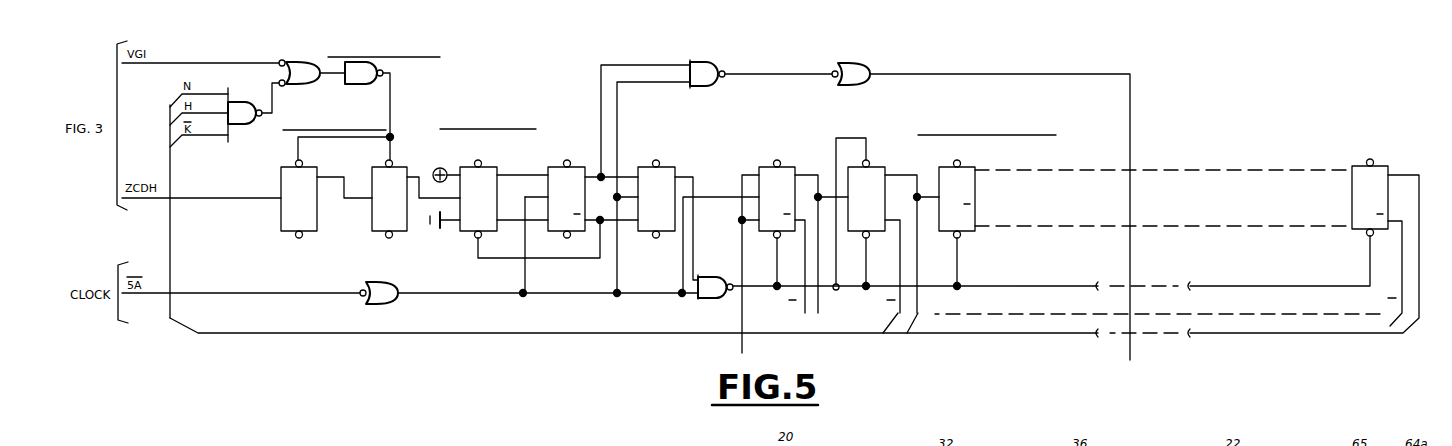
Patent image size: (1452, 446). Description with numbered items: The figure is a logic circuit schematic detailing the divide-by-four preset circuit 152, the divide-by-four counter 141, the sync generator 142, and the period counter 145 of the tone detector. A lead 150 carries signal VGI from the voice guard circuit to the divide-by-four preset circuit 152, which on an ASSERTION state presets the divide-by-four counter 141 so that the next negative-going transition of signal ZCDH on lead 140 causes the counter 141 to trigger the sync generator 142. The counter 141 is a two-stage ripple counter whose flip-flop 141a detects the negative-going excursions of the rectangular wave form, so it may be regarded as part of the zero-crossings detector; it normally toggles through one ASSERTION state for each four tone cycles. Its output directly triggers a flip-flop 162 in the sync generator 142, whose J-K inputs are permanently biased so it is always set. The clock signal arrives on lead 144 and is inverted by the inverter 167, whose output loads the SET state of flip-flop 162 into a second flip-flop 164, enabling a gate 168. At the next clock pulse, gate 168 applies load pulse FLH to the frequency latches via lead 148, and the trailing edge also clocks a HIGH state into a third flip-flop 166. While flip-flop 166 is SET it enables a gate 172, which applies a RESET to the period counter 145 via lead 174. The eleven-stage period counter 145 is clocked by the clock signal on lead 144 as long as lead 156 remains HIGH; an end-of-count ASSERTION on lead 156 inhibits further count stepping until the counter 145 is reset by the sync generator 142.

The lead 140 is at (188, 197).
The divide-by-four counter 141 is at (371, 176).
The flip-flop 141a is at (317, 220).
The sync generator 142 is at (594, 179).
The lead 144 is at (248, 292).
The period counter 145 is at (1104, 228).
The lead 148 is at (1130, 124).
The lead 150 is at (196, 62).
The divide-by-four preset circuit 152 is at (369, 100).
The lead 156 is at (742, 242).
The flip-flop 162 is at (470, 240).
The second flip-flop 164 is at (556, 165).
The third flip-flop 166 is at (665, 165).
The inverter 167 is at (380, 305).
The gate 168 is at (714, 58).
The gate 172 is at (712, 300).
The lead 174 is at (1007, 285).